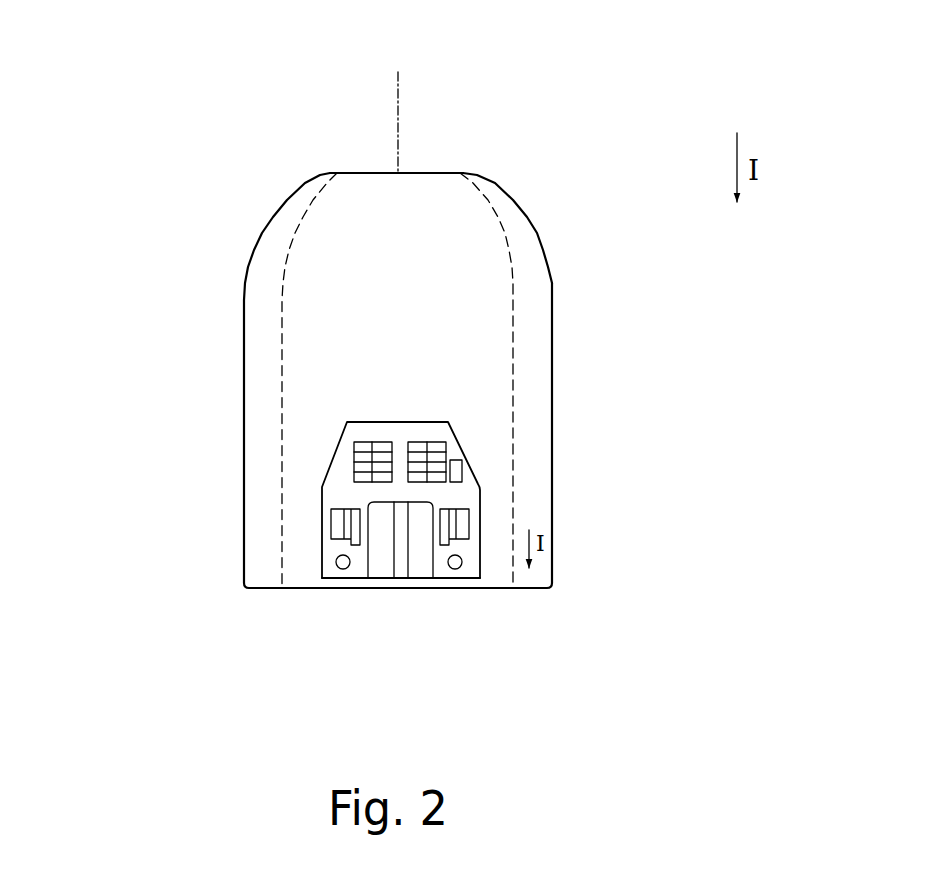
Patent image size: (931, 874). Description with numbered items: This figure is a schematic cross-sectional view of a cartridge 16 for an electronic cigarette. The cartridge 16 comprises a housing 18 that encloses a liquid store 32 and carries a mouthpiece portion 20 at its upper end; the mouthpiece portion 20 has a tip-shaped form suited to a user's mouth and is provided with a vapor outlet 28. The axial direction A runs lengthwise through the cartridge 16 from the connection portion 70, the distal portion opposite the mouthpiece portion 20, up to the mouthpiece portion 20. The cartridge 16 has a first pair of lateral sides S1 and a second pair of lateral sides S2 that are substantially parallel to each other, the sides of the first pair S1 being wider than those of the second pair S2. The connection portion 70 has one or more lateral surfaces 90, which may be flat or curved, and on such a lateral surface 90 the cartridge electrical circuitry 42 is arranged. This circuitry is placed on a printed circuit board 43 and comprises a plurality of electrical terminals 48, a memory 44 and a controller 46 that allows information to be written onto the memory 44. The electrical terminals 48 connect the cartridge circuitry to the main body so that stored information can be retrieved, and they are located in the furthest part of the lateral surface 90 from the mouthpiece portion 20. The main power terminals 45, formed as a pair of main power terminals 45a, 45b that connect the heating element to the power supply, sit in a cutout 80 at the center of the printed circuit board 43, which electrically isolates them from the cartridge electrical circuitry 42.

The cartridge 16 is at (310, 142).
The axial direction A is at (398, 83).
The mouthpiece portion 20 is at (547, 217).
The vapor outlet 28 is at (423, 188).
The second pair of lateral sides S2 is at (533, 282).
The first pair of lateral sides S1 is at (357, 298).
The housing 18 is at (552, 370).
The liquid store 32 is at (332, 370).
The connection portion 70 is at (222, 580).
The lateral surface 90 is at (492, 527).
The cutout 80 is at (363, 598).
The cartridge electrical circuitry 42 is at (327, 463).
The printed circuit board 43 is at (347, 478).
The controller 46 is at (354, 443).
The memory 44 is at (460, 461).
The electrical terminals 48 is at (320, 533).
The main power terminals 45 is at (477, 677).
The first main power terminal 45a is at (383, 563).
The second main power terminal 45b is at (420, 563).